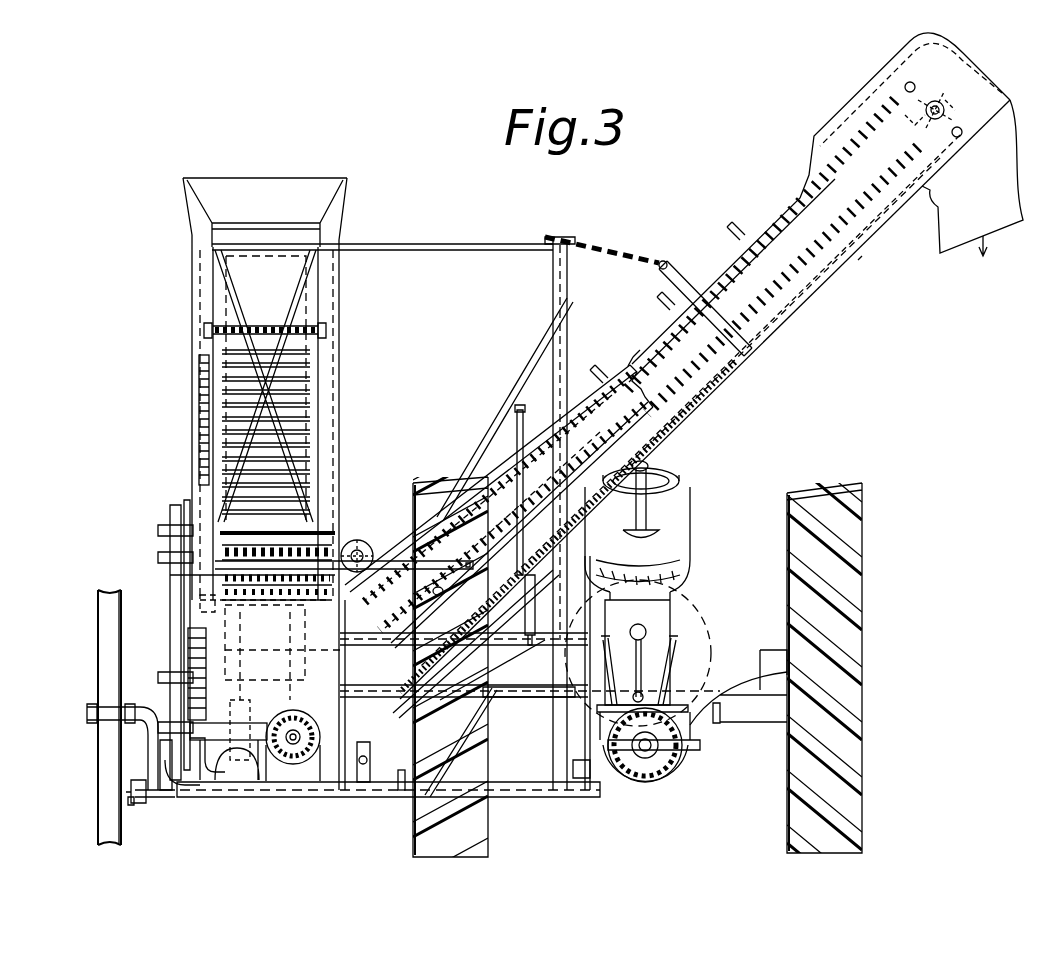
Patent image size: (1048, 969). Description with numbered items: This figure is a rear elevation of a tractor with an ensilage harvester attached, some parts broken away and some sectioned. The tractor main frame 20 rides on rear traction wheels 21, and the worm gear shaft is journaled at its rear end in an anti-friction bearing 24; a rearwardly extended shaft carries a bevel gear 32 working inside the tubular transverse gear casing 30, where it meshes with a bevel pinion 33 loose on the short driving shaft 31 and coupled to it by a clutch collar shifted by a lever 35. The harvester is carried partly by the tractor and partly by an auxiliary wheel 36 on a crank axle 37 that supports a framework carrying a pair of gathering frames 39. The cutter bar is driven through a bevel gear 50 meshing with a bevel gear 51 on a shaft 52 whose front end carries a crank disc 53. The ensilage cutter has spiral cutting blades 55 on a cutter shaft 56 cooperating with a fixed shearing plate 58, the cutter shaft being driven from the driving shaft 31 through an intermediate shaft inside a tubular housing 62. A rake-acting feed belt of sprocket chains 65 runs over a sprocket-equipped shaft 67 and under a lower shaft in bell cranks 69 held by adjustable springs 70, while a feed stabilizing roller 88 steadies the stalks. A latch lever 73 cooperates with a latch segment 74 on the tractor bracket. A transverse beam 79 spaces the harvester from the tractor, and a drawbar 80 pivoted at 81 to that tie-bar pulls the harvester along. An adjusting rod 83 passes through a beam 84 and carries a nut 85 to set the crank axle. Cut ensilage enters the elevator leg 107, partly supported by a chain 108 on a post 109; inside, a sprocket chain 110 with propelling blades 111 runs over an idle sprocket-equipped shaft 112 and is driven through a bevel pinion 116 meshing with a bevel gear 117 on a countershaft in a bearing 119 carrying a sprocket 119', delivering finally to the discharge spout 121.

The tractor main frame 20 is at (670, 613).
The rear traction wheels 21 is at (430, 507).
The anti-friction bearing 24 is at (574, 778).
The gear casing 30 is at (641, 783).
The driving shaft 31 is at (615, 770).
The bevel gear 32 is at (717, 724).
The bevel pinion 33 is at (667, 774).
The lever 35 is at (648, 645).
The auxiliary wheel 36 is at (100, 637).
The crank axle 37 is at (158, 741).
The gathering frames 39 is at (197, 223).
The bevel gear 50 is at (347, 540).
The bevel gear 51 is at (352, 552).
The shaft 52 is at (366, 582).
The crank disc 53 is at (361, 768).
The spiral cutting blades 55 is at (120, 696).
The cutter shaft 56 is at (229, 696).
The shearing plate 58 is at (186, 633).
The tubular housing 62 is at (527, 727).
The sprocket chains 65 is at (308, 413).
The sprocket-equipped shaft 67 is at (324, 330).
The bell cranks 69 is at (215, 572).
The adjustable springs 70 is at (200, 441).
The latch lever 73 is at (514, 418).
The latch segment 74 is at (534, 594).
The transverse beam 79 is at (541, 797).
The drawbar 80 is at (417, 748).
The pivotal connection 81 is at (402, 790).
The adjusting rod 83 is at (160, 748).
The beam 84 is at (135, 790).
The nut 85 is at (133, 796).
The feed stabilizing roller 88 is at (203, 610).
The elevator leg 107 is at (780, 313).
The chain 108 is at (640, 248).
The post 109 is at (546, 288).
The sprocket chain 110 is at (587, 400).
The propelling blades 111 is at (608, 372).
The idle sprocket-equipped shaft 112 is at (934, 122).
The bevel pinion 116 is at (297, 748).
The bevel gear 117 is at (267, 757).
The bearing 119 is at (205, 791).
The sprocket 119' is at (166, 808).
The discharge spout 121 is at (972, 178).